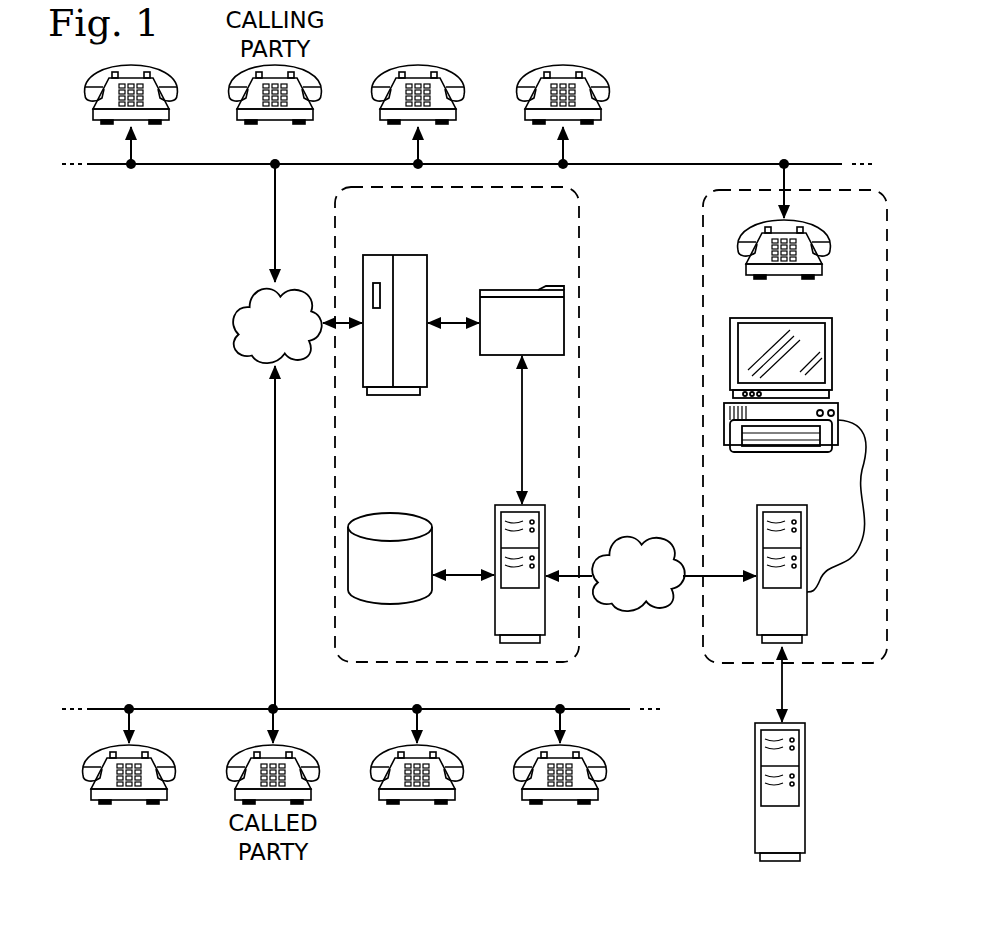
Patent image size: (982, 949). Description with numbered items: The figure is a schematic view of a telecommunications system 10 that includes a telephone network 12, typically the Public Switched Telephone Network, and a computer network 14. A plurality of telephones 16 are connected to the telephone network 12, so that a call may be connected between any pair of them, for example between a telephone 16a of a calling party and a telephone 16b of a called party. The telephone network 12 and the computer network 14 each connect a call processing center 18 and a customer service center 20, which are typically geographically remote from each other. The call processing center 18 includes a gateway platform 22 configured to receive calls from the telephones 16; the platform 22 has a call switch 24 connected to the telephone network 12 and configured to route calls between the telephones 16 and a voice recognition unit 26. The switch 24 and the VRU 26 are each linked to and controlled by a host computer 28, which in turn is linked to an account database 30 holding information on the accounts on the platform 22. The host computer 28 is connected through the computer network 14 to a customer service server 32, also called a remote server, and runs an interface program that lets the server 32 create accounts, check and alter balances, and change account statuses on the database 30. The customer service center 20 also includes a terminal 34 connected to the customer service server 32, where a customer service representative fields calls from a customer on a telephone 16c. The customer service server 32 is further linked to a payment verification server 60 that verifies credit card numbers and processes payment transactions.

The telecommunications system 10 is at (818, 56).
The telephone network 12 is at (226, 166).
The computer network 14 is at (638, 574).
The telephones 16 is at (174, 117).
The telephone of a calling party 16a is at (318, 117).
The telephone of a called party 16b is at (314, 783).
The customer telephone 16c is at (829, 240).
The call processing center 18 is at (548, 664).
The customer service center 20 is at (815, 664).
The gateway platform 22 is at (458, 262).
The call switch 24 is at (399, 394).
The voice recognition unit (VRU) 26 is at (526, 290).
The host computer 28 is at (536, 505).
The account database 30 is at (390, 558).
The customer service server 32 is at (807, 633).
The terminal 34 is at (833, 346).
The payment verification server 60 is at (805, 853).